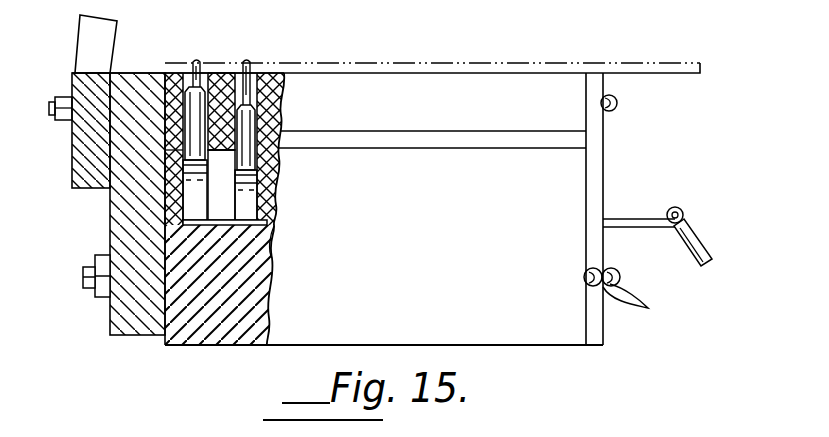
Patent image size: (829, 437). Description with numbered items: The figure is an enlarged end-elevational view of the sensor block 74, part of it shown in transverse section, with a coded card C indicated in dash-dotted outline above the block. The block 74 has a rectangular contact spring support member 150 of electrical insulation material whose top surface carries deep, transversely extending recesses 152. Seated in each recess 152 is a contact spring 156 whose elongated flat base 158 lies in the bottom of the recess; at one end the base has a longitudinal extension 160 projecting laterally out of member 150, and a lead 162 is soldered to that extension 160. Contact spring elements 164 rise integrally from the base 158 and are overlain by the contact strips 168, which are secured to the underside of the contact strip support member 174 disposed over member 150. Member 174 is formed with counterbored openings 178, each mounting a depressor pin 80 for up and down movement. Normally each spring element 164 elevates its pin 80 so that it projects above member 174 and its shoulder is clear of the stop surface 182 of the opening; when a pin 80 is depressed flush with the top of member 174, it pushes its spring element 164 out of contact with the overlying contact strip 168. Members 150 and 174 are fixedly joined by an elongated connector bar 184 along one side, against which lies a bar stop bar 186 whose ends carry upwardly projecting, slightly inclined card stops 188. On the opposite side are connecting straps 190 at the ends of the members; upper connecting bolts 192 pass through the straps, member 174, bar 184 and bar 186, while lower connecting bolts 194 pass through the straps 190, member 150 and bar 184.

The block 74 is at (292, 345).
The depressor pin 80 is at (197, 62).
The contact spring support member 150 is at (207, 328).
The recesses 152 is at (268, 222).
The contact spring 156 is at (263, 189).
The base 158 is at (276, 243).
The longitudinal extension 160 is at (647, 214).
The lead 162 is at (707, 243).
The contact spring elements 164 is at (257, 173).
The contact strips 168 is at (282, 118).
The contact strip support member 174 is at (514, 113).
The openings 178 is at (147, 100).
The stop surface 182 is at (227, 73).
The connector bar 184 is at (139, 322).
The bar stop bar 186 is at (72, 180).
The card stop 188 is at (78, 33).
The connecting straps 190 is at (605, 162).
The upper connecting bolts 192 is at (62, 107).
The lower connecting bolts 194 is at (648, 307).
The center line C is at (420, 62).